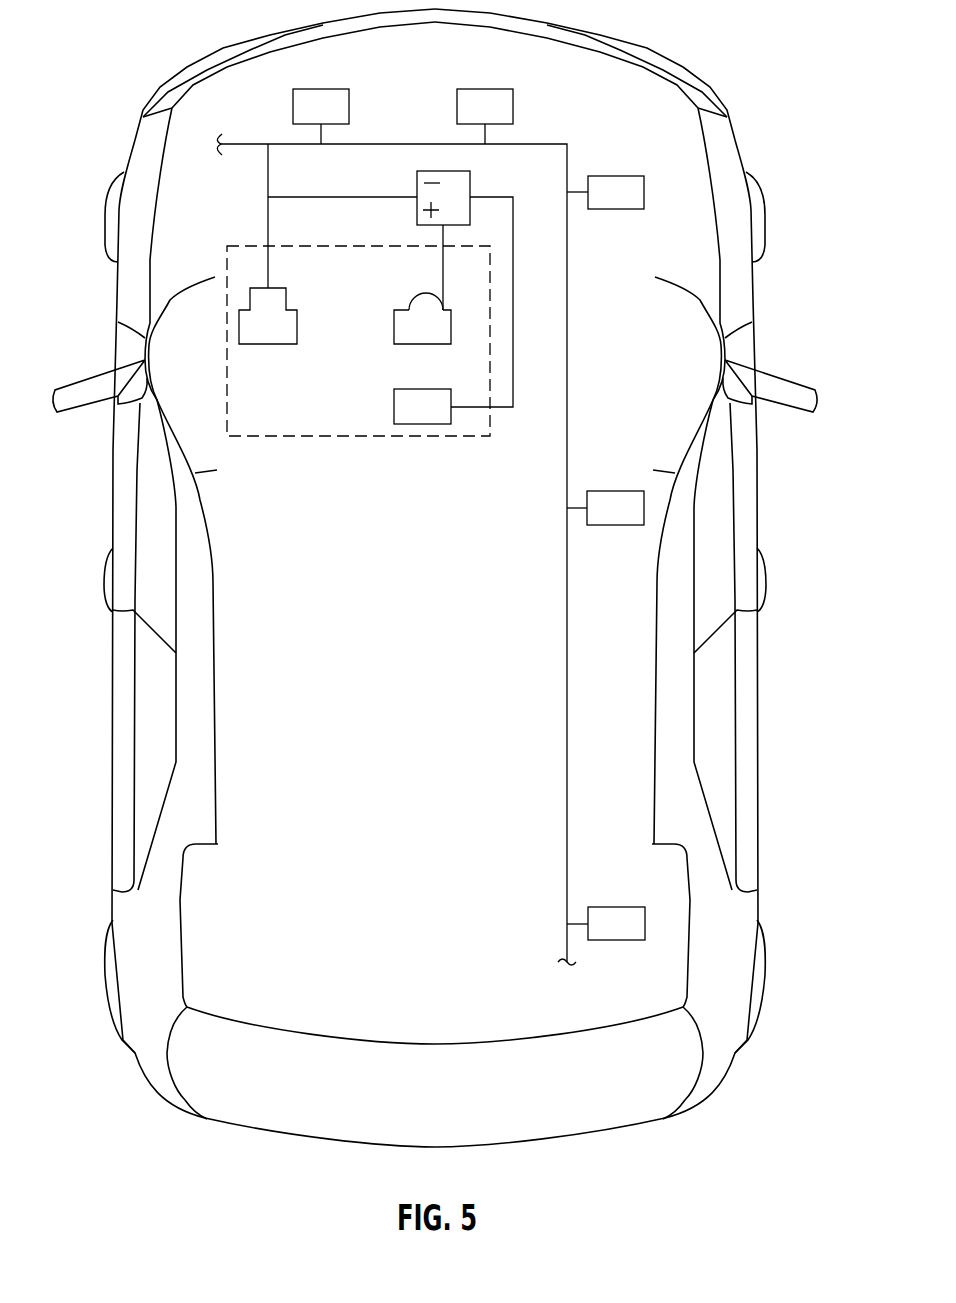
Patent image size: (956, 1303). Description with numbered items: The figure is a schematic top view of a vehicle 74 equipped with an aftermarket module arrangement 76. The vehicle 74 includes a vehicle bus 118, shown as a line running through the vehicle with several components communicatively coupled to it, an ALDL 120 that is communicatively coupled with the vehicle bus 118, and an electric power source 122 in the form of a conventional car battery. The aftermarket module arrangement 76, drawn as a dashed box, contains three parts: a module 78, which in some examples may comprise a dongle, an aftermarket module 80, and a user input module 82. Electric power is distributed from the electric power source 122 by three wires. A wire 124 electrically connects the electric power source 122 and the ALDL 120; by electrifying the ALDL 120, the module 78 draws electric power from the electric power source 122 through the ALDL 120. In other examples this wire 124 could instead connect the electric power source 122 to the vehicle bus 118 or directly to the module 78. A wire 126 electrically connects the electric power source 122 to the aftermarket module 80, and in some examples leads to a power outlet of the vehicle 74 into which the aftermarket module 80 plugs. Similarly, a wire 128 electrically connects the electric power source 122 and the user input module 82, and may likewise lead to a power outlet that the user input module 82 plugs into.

The vehicle 74 is at (117, 295).
The aftermarket module arrangement 76 is at (227, 262).
The module 78 is at (267, 344).
The aftermarket module 80 is at (422, 344).
The user input module 82 is at (422, 424).
The vehicle bus 118 is at (568, 158).
The ALDL 120 is at (268, 212).
The electric power source 122 is at (417, 182).
The wire 124 is at (360, 198).
The wire 126 is at (443, 290).
The wire 128 is at (513, 310).